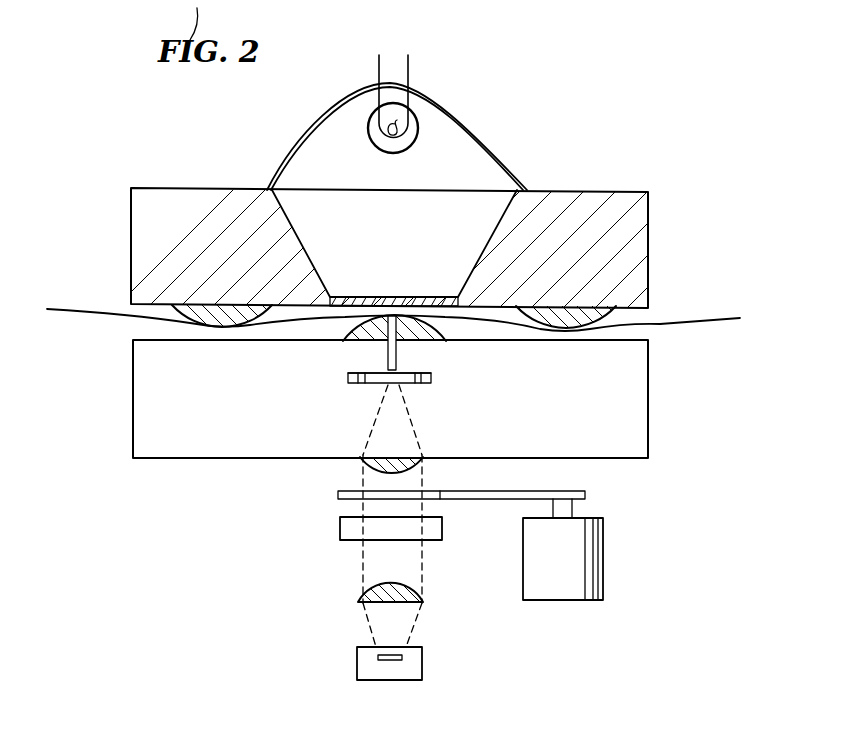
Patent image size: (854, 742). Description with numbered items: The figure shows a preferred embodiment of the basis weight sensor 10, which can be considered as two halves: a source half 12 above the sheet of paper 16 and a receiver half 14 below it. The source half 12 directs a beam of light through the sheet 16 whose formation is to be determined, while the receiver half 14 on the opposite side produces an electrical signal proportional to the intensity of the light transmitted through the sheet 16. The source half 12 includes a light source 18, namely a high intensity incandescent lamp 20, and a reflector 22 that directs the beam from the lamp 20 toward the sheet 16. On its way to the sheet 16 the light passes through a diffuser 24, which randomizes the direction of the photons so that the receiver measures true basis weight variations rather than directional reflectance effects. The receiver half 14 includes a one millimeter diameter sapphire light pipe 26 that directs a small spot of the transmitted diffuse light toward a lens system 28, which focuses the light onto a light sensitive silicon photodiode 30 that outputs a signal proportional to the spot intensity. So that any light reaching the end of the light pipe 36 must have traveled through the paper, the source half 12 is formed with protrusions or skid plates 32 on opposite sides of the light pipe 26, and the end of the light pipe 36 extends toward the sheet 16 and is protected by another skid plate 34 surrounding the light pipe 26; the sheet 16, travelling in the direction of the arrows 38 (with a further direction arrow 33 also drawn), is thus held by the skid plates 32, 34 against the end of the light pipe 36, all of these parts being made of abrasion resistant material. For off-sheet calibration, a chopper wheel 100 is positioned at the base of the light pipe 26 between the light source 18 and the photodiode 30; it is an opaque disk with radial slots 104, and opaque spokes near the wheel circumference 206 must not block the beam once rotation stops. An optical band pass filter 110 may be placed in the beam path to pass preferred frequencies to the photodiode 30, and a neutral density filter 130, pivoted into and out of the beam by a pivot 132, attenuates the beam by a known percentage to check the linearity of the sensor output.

The basis weight sensor 10 is at (655, 114).
The source half 12 is at (151, 180).
The receiver half 14 is at (146, 475).
The sheet of paper 16 is at (95, 317).
The light source 18 is at (538, 133).
The incandescent lamp 20 is at (420, 130).
The reflector 22 is at (307, 132).
The diffuser 24 is at (358, 296).
The sapphire light pipe 26 is at (397, 362).
The lens system 28 is at (363, 463).
The silicon photodiode 30 is at (423, 664).
The skid plates 32 is at (212, 317).
The film feed direction arrow 33 is at (731, 297).
The skid plate 34 is at (358, 340).
The end of the light pipe 36 is at (410, 347).
The arrows 38 is at (105, 287).
The chopper wheel 100 is at (409, 399).
The radial slots 104 is at (362, 383).
The optical band pass filter 110 is at (432, 542).
The neutral density filter 130 is at (433, 490).
The pivot 132 is at (580, 568).
The wheel circumference 206 is at (352, 372).